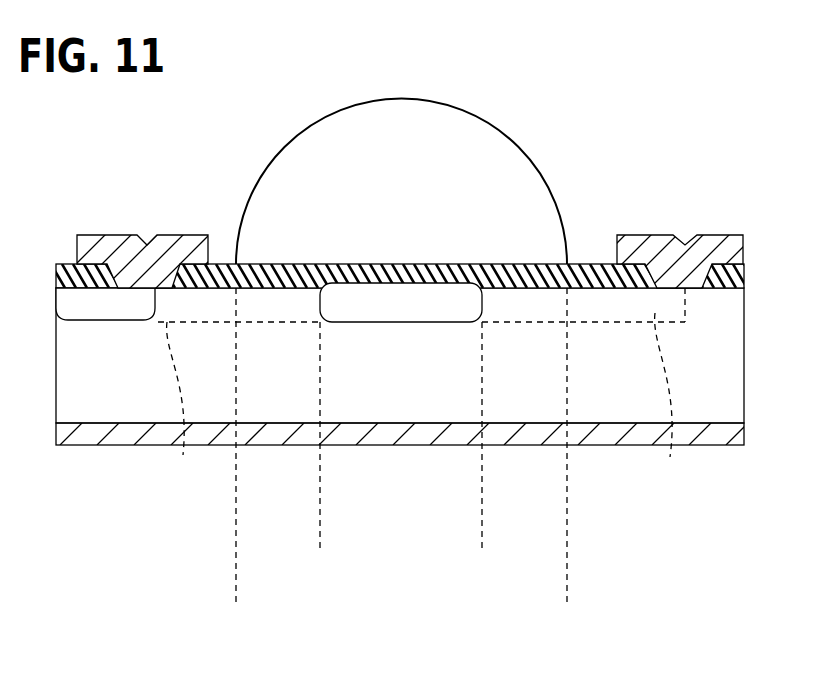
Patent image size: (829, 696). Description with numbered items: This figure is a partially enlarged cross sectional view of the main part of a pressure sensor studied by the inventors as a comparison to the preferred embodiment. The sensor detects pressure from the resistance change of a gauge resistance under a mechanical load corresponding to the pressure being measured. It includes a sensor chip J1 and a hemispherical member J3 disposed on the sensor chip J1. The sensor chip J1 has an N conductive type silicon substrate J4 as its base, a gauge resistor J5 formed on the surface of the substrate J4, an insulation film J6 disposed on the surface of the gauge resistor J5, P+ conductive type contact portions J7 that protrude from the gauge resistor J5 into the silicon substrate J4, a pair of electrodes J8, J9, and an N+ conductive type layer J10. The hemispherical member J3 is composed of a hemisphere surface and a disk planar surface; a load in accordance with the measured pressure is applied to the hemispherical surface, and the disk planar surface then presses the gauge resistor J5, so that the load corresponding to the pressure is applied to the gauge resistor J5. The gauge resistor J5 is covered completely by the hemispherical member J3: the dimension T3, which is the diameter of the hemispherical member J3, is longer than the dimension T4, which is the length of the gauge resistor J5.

The sensor chip J1 is at (700, 345).
The hemispherical member J3 is at (490, 130).
The N conductive type silicon substrate J4 is at (738, 397).
The gauge resistor J5 is at (467, 312).
The insulation film J6 is at (745, 283).
The P+ conductive type contact portion J7 is at (423, 400).
The electrode J8 is at (712, 235).
The electrode J9 is at (113, 235).
The N+ conductive type layer J10 is at (117, 318).
The dimension of the hemispherical member T3 is at (555, 592).
The dimension of the gauge resistor T4 is at (471, 539).